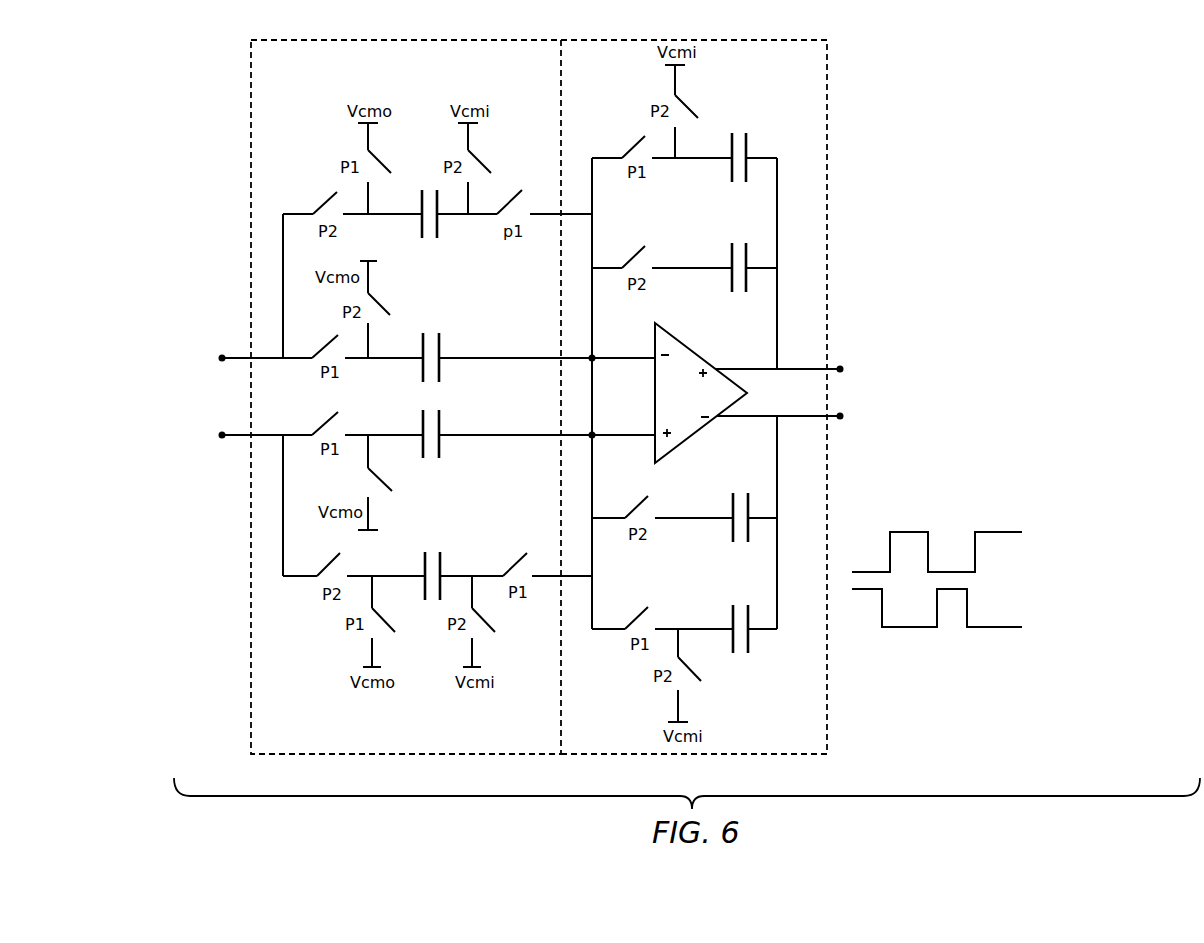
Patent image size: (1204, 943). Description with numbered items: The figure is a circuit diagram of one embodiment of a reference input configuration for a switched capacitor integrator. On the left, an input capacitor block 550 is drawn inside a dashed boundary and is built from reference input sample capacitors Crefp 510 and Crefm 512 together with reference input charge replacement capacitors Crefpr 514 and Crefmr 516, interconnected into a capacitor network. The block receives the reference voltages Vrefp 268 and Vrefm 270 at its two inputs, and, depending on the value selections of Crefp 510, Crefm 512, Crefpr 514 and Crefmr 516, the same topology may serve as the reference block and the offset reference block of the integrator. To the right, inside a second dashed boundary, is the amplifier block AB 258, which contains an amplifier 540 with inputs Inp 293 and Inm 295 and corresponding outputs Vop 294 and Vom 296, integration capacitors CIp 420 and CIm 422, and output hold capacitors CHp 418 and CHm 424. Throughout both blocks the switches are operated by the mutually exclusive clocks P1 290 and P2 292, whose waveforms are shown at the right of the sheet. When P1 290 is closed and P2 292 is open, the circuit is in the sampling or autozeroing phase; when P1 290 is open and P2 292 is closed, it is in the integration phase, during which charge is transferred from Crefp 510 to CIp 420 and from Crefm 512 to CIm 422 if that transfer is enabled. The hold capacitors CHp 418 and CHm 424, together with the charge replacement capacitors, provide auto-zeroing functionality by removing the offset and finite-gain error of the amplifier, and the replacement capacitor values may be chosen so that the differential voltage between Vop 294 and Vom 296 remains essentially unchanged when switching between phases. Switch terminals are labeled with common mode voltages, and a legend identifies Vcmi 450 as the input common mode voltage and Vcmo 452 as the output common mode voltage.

The input capacitor block 550 is at (302, 750).
The AB 258 is at (612, 746).
The Crefpr 514 is at (420, 231).
The Crefp 510 is at (440, 372).
The Crefm 512 is at (441, 450).
The Crefmr 516 is at (422, 558).
The CHp 418 is at (730, 173).
The CIp 420 is at (730, 283).
The CIm 422 is at (730, 533).
The CHm 424 is at (732, 613).
The differential operational amplifier 540 is at (685, 343).
The Inp 293 is at (623, 336).
The Inm 295 is at (623, 456).
The Vrefp 268 is at (196, 362).
The Vrefm 270 is at (195, 435).
The Vop 294 is at (843, 369).
The Vom 296 is at (845, 416).
The P1 290 is at (956, 552).
The P2 292 is at (956, 607).
The input common mode voltage Vcmi 450 is at (1017, 658).
The output common mode voltage Vcmo 452 is at (1026, 680).